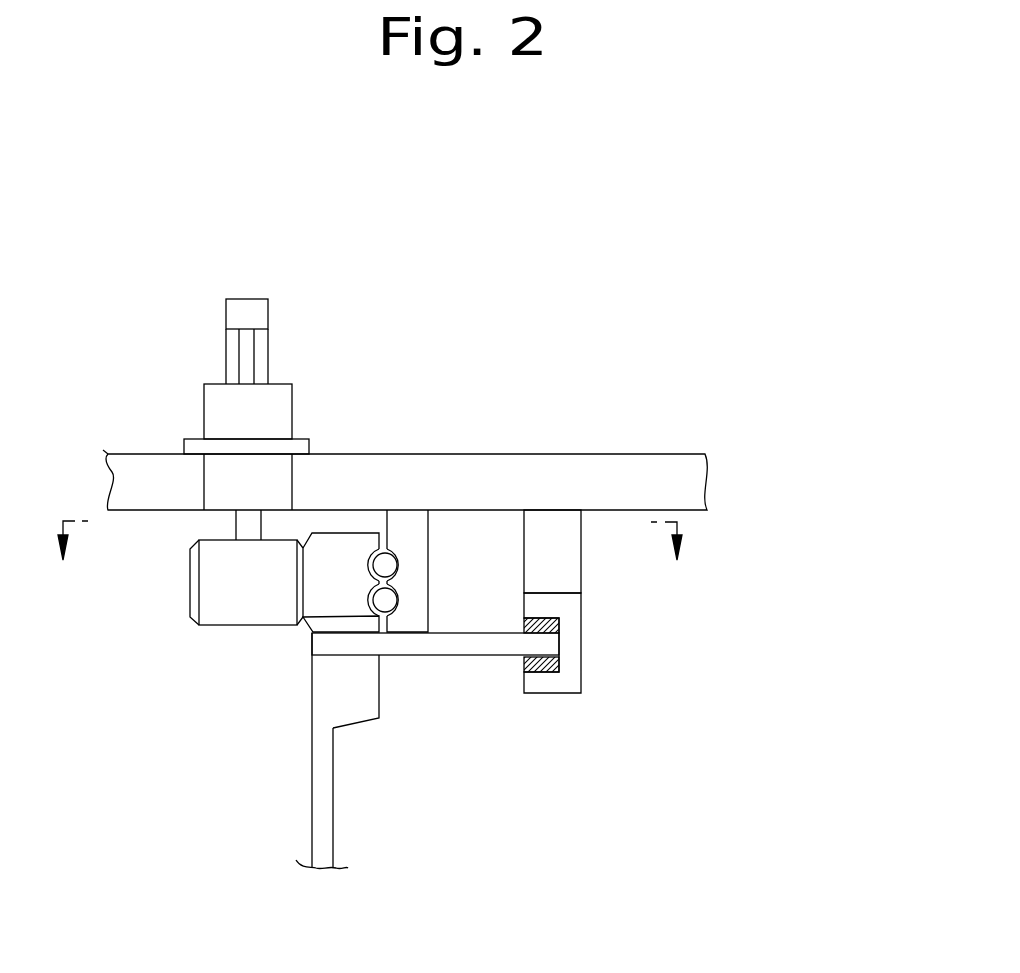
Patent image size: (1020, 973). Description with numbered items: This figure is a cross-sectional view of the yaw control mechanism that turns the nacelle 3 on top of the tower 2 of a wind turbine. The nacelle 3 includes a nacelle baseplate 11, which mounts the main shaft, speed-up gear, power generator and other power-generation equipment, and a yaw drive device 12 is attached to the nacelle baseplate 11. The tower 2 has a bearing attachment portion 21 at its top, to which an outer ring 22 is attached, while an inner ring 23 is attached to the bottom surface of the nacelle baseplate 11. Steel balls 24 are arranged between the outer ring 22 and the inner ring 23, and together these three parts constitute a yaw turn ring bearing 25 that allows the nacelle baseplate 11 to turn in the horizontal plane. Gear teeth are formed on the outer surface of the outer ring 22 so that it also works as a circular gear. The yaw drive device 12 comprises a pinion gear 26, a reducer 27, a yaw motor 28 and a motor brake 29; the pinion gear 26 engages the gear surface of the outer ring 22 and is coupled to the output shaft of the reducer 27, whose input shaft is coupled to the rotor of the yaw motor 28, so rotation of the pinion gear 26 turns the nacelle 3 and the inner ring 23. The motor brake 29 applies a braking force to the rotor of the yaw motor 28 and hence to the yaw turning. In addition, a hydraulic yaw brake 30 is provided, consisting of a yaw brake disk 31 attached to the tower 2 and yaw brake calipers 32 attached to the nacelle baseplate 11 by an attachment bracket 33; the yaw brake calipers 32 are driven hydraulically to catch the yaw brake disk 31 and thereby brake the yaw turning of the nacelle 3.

The tower 2 is at (333, 785).
The nacelle 3 is at (705, 287).
The nacelle baseplate 11 is at (600, 455).
The yaw drive device 12 is at (420, 247).
The bearing attachment portion 21 is at (379, 685).
The outer ring 22 is at (333, 542).
The inner ring 23 is at (432, 560).
The steel balls 24 is at (394, 556).
The yaw turn ring bearing 25 is at (513, 392).
The pinion gear 26 is at (248, 627).
The reducer 27 is at (204, 412).
The yaw motor 28 is at (270, 315).
The motor brake 29 is at (246, 298).
The yaw brake 30 is at (770, 638).
The yaw brake disk 31 is at (470, 652).
The yaw brake caliper 32 is at (572, 645).
The attachment bracket 33 is at (581, 555).